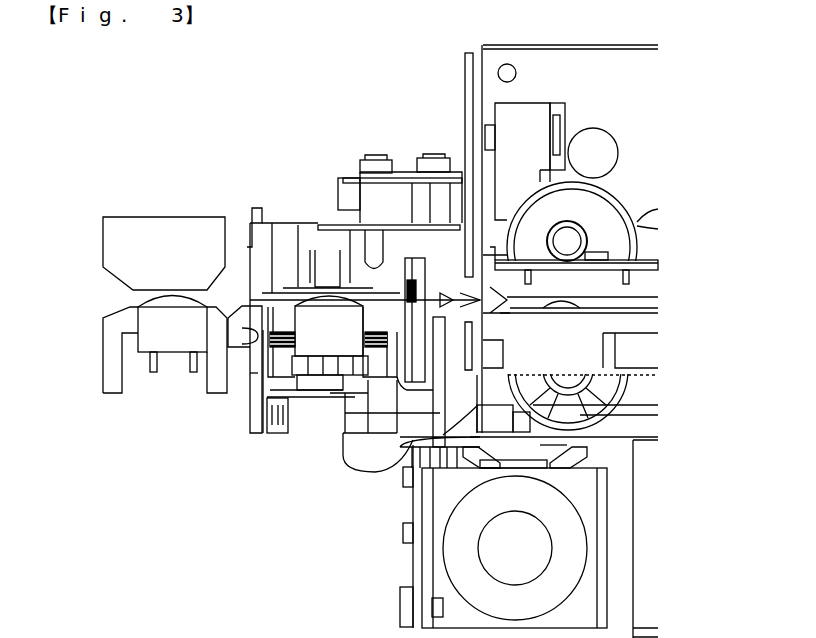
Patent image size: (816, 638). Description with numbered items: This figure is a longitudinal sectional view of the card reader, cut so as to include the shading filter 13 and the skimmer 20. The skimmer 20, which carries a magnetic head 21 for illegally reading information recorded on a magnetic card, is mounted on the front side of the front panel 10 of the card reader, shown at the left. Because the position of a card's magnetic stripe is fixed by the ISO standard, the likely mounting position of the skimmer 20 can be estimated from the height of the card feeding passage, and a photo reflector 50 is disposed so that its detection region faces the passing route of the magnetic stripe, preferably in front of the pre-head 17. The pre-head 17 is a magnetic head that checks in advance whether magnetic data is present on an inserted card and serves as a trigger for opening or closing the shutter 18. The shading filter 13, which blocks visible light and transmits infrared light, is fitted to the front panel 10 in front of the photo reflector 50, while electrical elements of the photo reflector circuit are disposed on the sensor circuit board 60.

The front panel 10 is at (250, 373).
The shading filter 13 is at (241, 335).
The pre-head 17 is at (328, 323).
The shutter 18 is at (418, 263).
The skimmer 20 is at (132, 251).
The magnetic head 21 is at (162, 323).
The photo reflector 50 is at (255, 335).
The sensor circuit board 60 is at (263, 427).